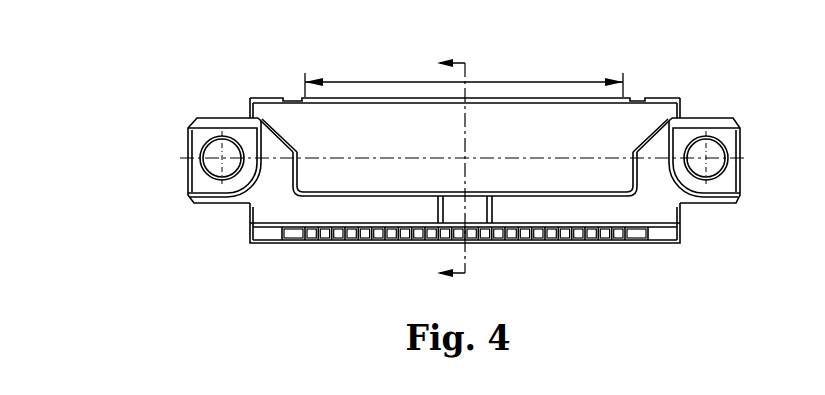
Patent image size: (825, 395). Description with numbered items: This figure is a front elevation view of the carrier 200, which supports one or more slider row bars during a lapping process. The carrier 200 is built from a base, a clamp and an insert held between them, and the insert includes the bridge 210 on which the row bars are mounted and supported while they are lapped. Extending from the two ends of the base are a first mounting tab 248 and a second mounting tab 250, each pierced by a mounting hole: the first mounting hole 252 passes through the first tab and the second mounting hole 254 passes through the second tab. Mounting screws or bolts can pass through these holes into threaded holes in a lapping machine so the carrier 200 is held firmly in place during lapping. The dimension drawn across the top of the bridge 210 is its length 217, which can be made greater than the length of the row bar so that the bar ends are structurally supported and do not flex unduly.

The carrier 200 is at (150, 156).
The bridge 210 is at (552, 105).
The bridge length 217 is at (542, 82).
The first mounting tab 248 is at (210, 123).
The second mounting tab 250 is at (730, 124).
The first mounting hole 252 is at (215, 168).
The second mounting hole 254 is at (717, 167).